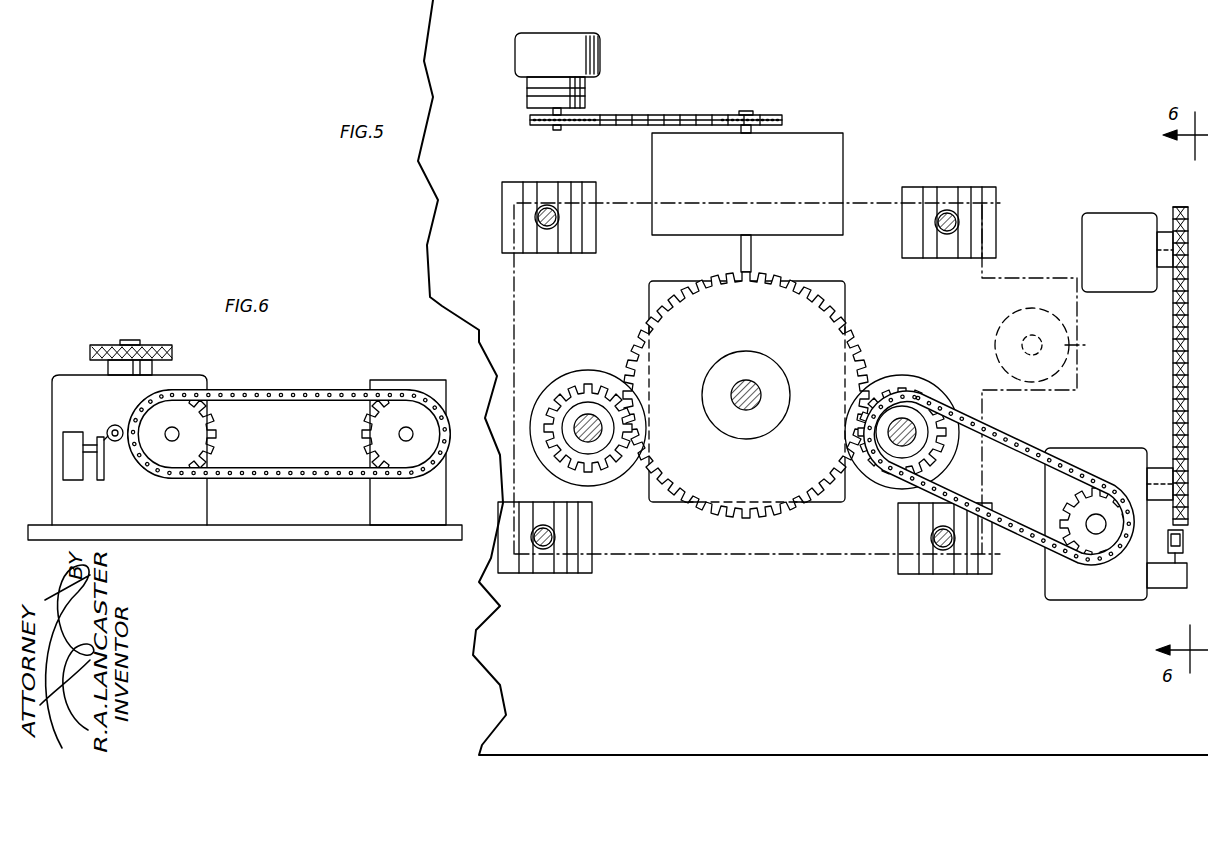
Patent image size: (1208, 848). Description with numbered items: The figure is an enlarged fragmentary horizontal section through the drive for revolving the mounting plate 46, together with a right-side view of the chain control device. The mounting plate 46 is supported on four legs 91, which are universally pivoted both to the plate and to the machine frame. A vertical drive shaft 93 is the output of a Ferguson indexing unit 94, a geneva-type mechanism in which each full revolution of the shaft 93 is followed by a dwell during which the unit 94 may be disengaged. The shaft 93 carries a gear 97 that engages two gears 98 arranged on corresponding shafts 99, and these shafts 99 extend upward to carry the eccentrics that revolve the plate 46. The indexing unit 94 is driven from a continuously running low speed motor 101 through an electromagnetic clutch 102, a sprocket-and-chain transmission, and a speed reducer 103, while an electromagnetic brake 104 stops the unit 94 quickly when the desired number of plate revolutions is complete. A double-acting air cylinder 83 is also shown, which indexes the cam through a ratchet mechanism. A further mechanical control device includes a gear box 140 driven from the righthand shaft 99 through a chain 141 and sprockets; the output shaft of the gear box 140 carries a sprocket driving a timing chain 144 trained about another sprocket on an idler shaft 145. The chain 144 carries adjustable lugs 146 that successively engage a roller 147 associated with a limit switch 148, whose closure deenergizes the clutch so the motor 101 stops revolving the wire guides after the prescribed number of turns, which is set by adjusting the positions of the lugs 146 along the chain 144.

In FIG. 5, the mounting plate 46 is at (617, 224).
In FIG. 5, the double-acting air cylinder 83 is at (1000, 330).
In FIG. 5, the legs 91 is at (547, 210).
In FIG. 5, the vertical drive shaft 93 is at (746, 385).
In FIG. 5, the Ferguson indexing unit 94 is at (665, 503).
In FIG. 5, the gear 97 is at (700, 295).
In FIG. 5, the gears 98 is at (555, 392).
In FIG. 5, the shafts 99 is at (588, 420).
In FIG. 5, the low speed motor 101 is at (585, 58).
In FIG. 5, the electromagnetic clutch 102 is at (580, 84).
In FIG. 5, the speed reducer 103 is at (820, 162).
In FIG. 5, the electromagnetic brake 104 is at (585, 98).
In FIG. 5, the gear box 140 is at (1132, 474).
In FIG. 6, the gear box 140 is at (158, 516).
In FIG. 5, the chain 141 is at (1020, 450).
In FIG. 6, the chain 141 is at (160, 345).
In FIG. 5, the timing chain 144 is at (1176, 218).
In FIG. 6, the timing chain 144 is at (268, 392).
In FIG. 5, the idler shaft 145 is at (1190, 245).
In FIG. 6, the idler shaft 145 is at (408, 442).
In FIG. 5, the adjustable lugs 146 is at (1178, 262).
In FIG. 6, the adjustable lugs 146 is at (355, 385).
In FIG. 5, the roller 147 is at (1165, 543).
In FIG. 6, the roller 147 is at (115, 425).
In FIG. 5, the limit switch 148 is at (1165, 590).
In FIG. 6, the limit switch 148 is at (75, 422).